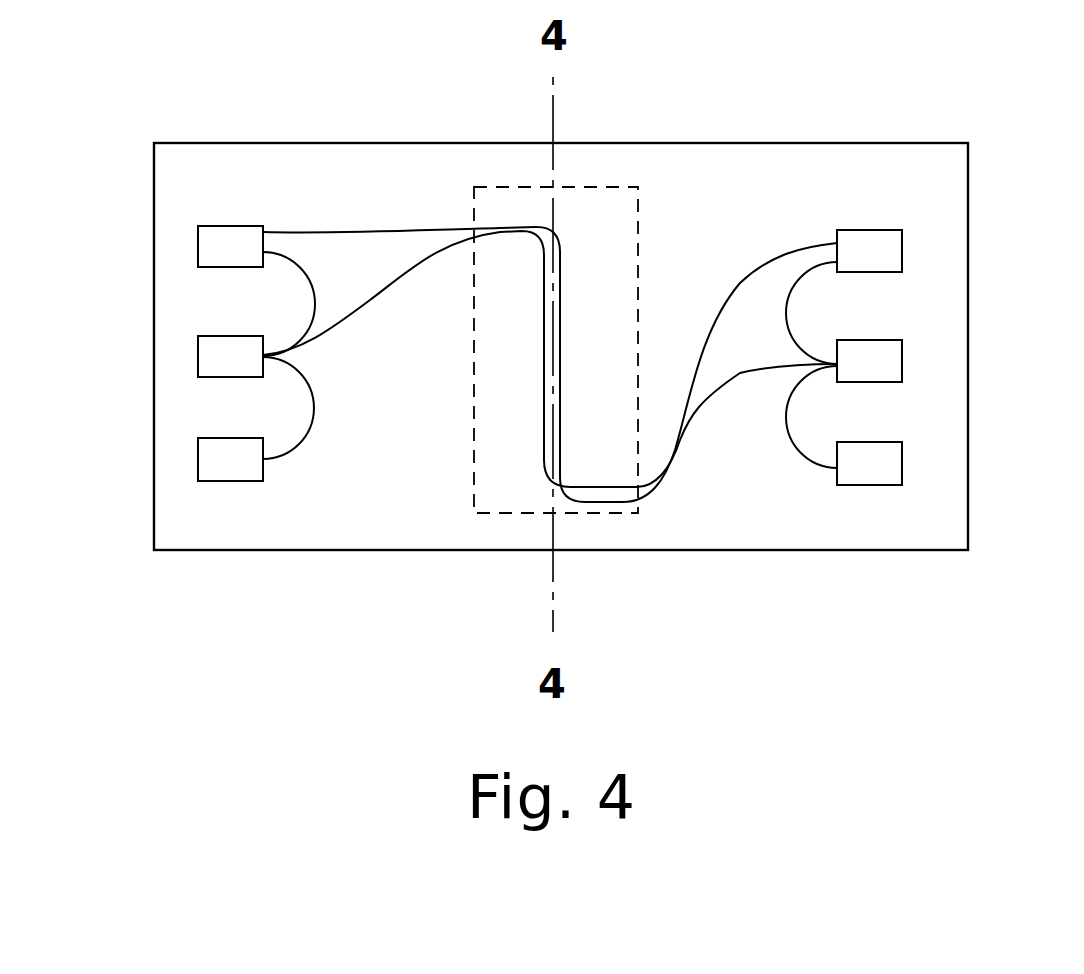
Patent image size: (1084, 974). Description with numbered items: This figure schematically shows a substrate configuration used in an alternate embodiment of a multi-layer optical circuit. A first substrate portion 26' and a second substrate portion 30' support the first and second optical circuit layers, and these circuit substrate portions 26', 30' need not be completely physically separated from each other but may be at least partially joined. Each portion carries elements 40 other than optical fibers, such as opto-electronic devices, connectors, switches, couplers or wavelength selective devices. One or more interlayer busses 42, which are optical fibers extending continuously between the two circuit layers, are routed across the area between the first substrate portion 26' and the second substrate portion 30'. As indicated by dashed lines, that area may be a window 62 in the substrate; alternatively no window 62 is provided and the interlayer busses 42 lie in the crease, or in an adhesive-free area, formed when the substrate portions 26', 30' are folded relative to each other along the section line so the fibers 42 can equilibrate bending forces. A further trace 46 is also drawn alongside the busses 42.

The first substrate portion 26' is at (561, 395).
The second substrate portion 30' is at (844, 443).
The elements 40 is at (198, 458).
The interlayer busses 42 is at (672, 478).
The inner conductive trace 46 is at (543, 443).
The window 62 is at (617, 186).